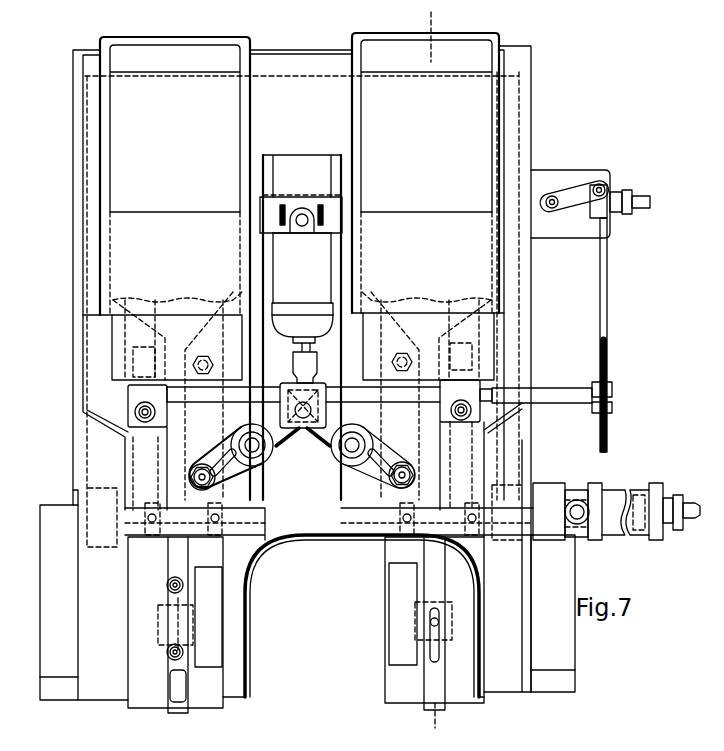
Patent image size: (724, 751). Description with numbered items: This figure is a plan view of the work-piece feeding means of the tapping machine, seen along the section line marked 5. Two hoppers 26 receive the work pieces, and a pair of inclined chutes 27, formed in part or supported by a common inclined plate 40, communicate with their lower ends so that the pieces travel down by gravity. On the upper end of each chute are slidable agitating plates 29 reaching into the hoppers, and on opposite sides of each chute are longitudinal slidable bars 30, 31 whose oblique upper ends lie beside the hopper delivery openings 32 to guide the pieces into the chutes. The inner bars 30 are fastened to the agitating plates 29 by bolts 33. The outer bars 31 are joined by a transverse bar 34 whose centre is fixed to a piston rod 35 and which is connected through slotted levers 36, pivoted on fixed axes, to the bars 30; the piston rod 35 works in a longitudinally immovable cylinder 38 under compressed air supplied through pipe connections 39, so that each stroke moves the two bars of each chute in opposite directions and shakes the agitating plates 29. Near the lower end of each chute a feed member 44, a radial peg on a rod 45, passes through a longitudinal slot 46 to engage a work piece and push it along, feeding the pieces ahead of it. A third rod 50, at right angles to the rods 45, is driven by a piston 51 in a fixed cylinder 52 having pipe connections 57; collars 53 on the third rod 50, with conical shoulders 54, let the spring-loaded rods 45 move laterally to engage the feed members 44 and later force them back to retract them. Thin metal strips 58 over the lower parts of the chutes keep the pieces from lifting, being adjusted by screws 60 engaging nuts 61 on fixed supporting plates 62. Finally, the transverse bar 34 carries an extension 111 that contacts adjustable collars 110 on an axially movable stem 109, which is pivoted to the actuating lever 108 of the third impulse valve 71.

The section line 5 is at (438, 370).
The hopper 26 is at (352, 118).
The inclined chute 27 is at (490, 441).
The agitating plate 29 is at (423, 300).
The slidable bar 30 is at (378, 352).
The slidable bar 31 is at (477, 360).
The hopper delivery opening 32 is at (303, 396).
The bolt 33 is at (405, 356).
The transverse bar 34 is at (253, 391).
The piston rod 35 is at (309, 349).
The slotted lever 36 is at (370, 474).
The cylinder 38 is at (330, 262).
The pipe connection 39 is at (274, 325).
The inclined plate 40 is at (529, 335).
The feed member 44 is at (428, 623).
The rod 45 is at (452, 472).
The longitudinal slot 46 is at (444, 618).
The third rod 50 is at (299, 535).
The piston 51 is at (645, 483).
The fixed cylinder 52 is at (607, 523).
The collar 53 is at (455, 500).
The conical shoulder 54 is at (329, 531).
The pipe connection 57 is at (690, 503).
The thin metal strip 58 is at (173, 692).
The adjusting screw 60 is at (167, 653).
The nut 61 is at (183, 653).
The fixed supporting plate 62 is at (412, 660).
The third impulse valve 71 is at (556, 170).
The actuating lever 108 is at (580, 182).
The stem 109 is at (606, 290).
The adjustable collar 110 is at (612, 405).
The extension 111 is at (563, 388).